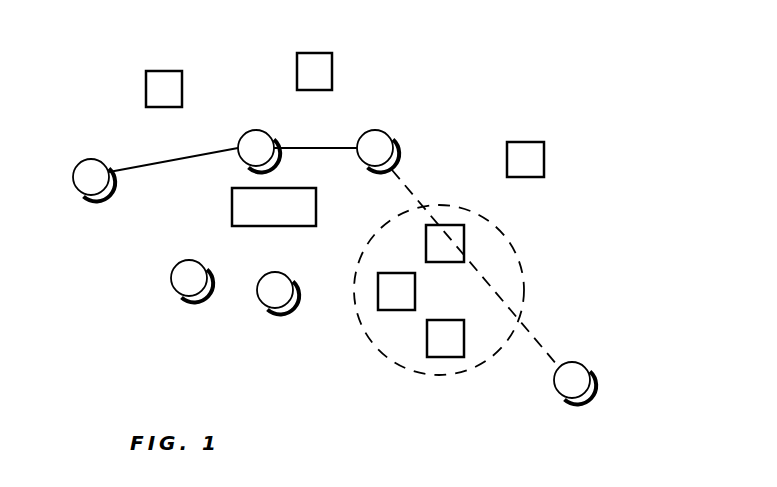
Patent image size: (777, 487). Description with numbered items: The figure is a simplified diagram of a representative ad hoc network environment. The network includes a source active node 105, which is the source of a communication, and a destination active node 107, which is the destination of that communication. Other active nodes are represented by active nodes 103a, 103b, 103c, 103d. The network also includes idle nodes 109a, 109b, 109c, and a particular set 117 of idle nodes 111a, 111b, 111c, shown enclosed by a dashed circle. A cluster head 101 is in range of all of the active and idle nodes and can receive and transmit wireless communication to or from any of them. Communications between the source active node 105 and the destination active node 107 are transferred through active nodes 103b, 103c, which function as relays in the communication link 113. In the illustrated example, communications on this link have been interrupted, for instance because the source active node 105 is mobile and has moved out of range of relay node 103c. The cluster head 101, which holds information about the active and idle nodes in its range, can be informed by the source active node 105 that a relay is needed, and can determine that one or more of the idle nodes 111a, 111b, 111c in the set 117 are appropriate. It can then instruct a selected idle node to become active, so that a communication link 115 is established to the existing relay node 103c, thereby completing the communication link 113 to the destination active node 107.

The cluster head 101 is at (232, 206).
The active node 103a is at (200, 298).
The active node 103b is at (256, 130).
The active node 103c is at (375, 130).
The active node 103d is at (268, 310).
The source active node 105 is at (572, 399).
The destination active node 107 is at (92, 159).
The idle node 109a is at (159, 70).
The idle node 109b is at (317, 53).
The idle node 109c is at (527, 142).
The idle node 111a is at (448, 357).
The idle node 111b is at (448, 225).
The idle node 111c is at (415, 291).
The communication link 113 is at (170, 161).
The communication link 115 is at (402, 187).
The set of idle nodes 117 is at (523, 265).